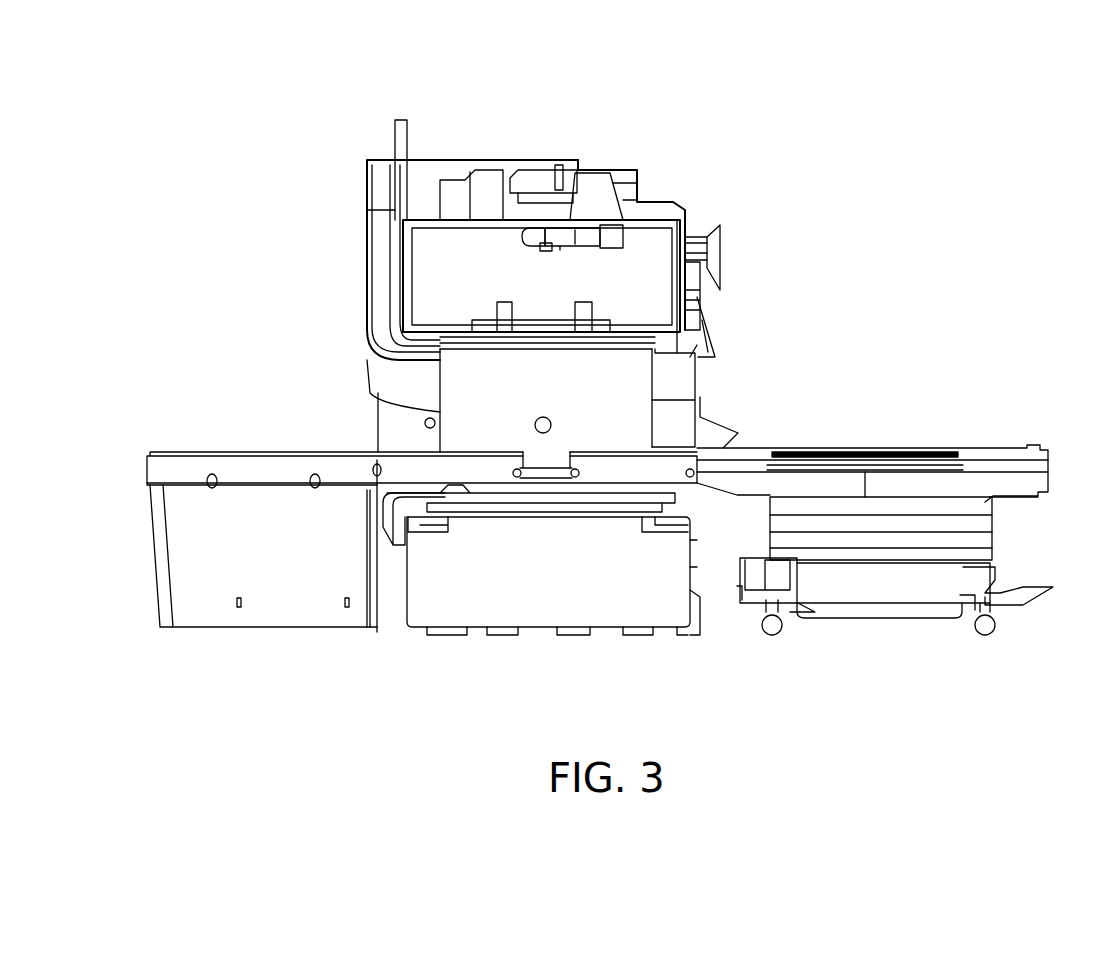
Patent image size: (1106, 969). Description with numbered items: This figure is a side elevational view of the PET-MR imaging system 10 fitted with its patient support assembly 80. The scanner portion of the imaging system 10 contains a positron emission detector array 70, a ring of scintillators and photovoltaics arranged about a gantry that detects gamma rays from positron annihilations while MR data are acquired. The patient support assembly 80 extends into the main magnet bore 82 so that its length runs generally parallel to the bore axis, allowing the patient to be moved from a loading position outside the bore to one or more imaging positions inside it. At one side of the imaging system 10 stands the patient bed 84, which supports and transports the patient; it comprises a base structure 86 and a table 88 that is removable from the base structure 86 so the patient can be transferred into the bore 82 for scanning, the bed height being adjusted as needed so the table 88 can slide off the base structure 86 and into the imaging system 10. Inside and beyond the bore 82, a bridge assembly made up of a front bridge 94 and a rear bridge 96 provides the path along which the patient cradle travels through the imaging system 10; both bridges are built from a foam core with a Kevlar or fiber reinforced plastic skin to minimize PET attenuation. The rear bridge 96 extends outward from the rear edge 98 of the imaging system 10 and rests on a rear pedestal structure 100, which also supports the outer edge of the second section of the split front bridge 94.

The PET-MR imaging system 10 is at (878, 91).
The positron emission detector array 70 is at (535, 151).
The patient support assembly 80 is at (928, 340).
The main magnet bore 82 is at (517, 398).
The patient bed 84 is at (996, 436).
The base structure 86 is at (933, 620).
The table 88 is at (1014, 504).
The front bridge 94 is at (598, 470).
The rear bridge 96 is at (238, 436).
The rear edge 98 is at (366, 239).
The rear pedestal structure 100 is at (262, 628).